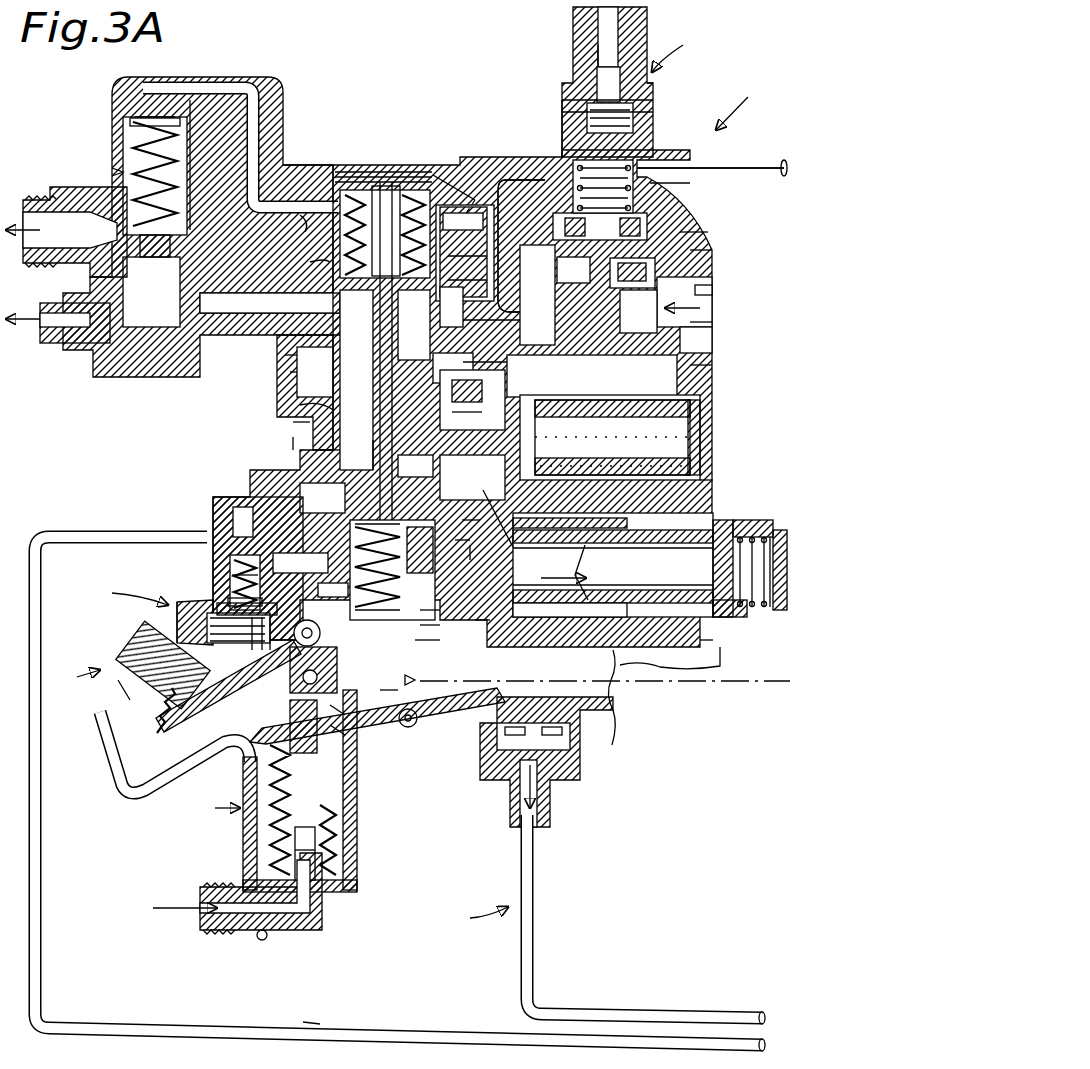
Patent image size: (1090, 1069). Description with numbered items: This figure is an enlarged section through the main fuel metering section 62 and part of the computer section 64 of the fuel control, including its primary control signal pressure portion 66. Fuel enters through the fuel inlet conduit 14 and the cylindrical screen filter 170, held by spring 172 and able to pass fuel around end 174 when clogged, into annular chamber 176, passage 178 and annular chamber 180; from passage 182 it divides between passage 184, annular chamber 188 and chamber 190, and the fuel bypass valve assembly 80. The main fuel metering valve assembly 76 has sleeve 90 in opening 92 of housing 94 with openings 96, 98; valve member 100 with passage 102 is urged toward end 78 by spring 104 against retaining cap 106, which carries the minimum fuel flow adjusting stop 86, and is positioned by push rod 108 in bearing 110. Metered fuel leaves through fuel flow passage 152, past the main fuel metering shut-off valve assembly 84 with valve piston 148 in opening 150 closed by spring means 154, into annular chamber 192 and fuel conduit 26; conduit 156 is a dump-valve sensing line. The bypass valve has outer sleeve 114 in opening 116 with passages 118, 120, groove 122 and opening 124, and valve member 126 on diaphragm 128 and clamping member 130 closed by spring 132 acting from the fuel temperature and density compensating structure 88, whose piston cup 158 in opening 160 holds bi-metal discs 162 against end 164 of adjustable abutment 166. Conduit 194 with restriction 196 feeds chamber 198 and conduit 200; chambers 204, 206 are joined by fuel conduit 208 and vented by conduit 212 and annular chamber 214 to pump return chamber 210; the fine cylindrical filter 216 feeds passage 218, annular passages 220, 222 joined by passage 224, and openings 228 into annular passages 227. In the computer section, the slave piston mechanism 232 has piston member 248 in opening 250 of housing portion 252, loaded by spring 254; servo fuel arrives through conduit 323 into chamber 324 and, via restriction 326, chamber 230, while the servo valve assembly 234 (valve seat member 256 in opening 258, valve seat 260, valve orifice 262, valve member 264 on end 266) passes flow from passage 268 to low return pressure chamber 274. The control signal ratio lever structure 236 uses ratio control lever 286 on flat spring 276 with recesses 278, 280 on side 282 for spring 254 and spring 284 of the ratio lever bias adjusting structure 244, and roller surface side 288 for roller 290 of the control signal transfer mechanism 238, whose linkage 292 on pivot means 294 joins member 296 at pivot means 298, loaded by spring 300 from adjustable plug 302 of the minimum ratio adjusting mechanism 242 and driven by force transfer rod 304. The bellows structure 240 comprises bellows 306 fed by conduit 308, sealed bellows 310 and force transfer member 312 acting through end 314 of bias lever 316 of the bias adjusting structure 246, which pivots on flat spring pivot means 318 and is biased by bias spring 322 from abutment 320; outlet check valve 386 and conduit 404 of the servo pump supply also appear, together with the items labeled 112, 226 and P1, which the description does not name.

The fuel inlet conduit 14 is at (590, 572).
The fuel conduit 26 is at (45, 205).
The main fuel metering section 62 is at (488, 371).
The computer section 64 is at (481, 904).
The primary control signal pressure portion 66 is at (347, 790).
The main fuel metering valve assembly 76 is at (285, 360).
The end of opening 78 is at (372, 455).
The fuel bypass valve assembly 80 is at (712, 294).
The main fuel metering shut-off valve assembly 84 is at (118, 172).
The minimum fuel flow adjusting stop 86 is at (375, 180).
The fuel temperature and density compensating structure 88 is at (679, 50).
The sleeve 90 is at (356, 380).
The opening 92 is at (467, 258).
The housing 94 is at (495, 160).
The opening 96 is at (445, 318).
The opening 98 is at (290, 375).
The valve member 100 is at (445, 338).
The passage 102 is at (293, 427).
The spring 104 is at (446, 150).
The retaining cap 106 is at (350, 168).
The push rod 108 is at (430, 468).
The bearing 110 is at (472, 477).
The spring retainer 112 is at (405, 180).
The outer sleeve 114 is at (572, 365).
The opening 116 is at (712, 275).
The axially extending passage 118 is at (712, 345).
The axially extending passage 120 is at (558, 312).
The annular interior groove 122 is at (690, 232).
The transversely extending opening 124 is at (712, 322).
The valve member 126 is at (705, 250).
The diaphragm 128 is at (588, 210).
The clamping member 130 is at (603, 186).
The spring 132 is at (692, 185).
The valve piston 148 is at (130, 148).
The opening 150 is at (200, 110).
The fuel flow passage 152 is at (181, 281).
The spring means 154 is at (143, 117).
The conduit 156 is at (48, 343).
The piston cup 158 is at (665, 100).
The opening 160 is at (585, 95).
The bi-metal discs 162 is at (560, 125).
The end of adjustable abutment 164 is at (673, 82).
The adjustable abutment 166 is at (573, 30).
The cylindrical screen filter 170 is at (653, 600).
The spring 172 is at (722, 615).
The end of filter 174 is at (613, 567).
The annular chamber 176 is at (715, 647).
The passage 178 is at (690, 498).
The annular chamber 180 is at (610, 437).
The passage 182 is at (712, 380).
The passage 184 is at (473, 400).
The annular chamber 188 is at (465, 408).
The chamber 190 is at (293, 336).
The annular chamber 192 is at (211, 227).
The conduit 194 is at (491, 330).
The restriction 196 is at (463, 294).
The chamber 198 is at (672, 120).
The conduit 200 is at (787, 128).
The chamber 204 is at (135, 125).
The chamber 206 is at (330, 262).
The fuel conduit 208 is at (240, 93).
The pump return chamber 210 is at (728, 295).
The conduit 212 is at (467, 210).
The annular chamber 214 is at (501, 349).
The fine cylindrical filter 216 is at (622, 468).
The passage 218 is at (612, 433).
The annular passage 220 is at (293, 437).
The annular passage 222 is at (288, 233).
The passage 224 is at (305, 310).
The port 226 is at (320, 460).
The annular passages 227 is at (305, 415).
The openings 228 is at (467, 275).
The chamber 230 is at (300, 470).
The slave piston mechanism 232 is at (352, 585).
The servo valve assembly 234 is at (473, 542).
The control signal ratio lever structure 236 is at (422, 655).
The control signal transfer mechanism 238 is at (387, 673).
The bellows structure 240 is at (362, 838).
The minimum signal pressure to fuel flow ratio adjusting mechanism 242 is at (142, 612).
The signal pressure to fuel flow ratio lever bias adjusting structure 244 is at (208, 528).
The primary control signal pressure bias adjusting structure 246 is at (134, 665).
The piston member 248 is at (305, 497).
The opening 250 is at (480, 511).
The housing portion 252 is at (362, 852).
The spring 254 is at (415, 560).
The valve seat member 256 is at (465, 540).
The opening 258 is at (613, 548).
The valve seat 260 is at (420, 620).
The valve orifice 262 is at (548, 578).
The valve member 264 is at (497, 628).
The end of ratio lever 266 is at (480, 628).
The passage 268 is at (465, 520).
The low return pressure chamber 274 is at (613, 693).
The flat spring 276 is at (300, 562).
The recess 278 is at (377, 596).
The recess 280 is at (233, 603).
The side 282 is at (240, 587).
The spring 284 is at (222, 577).
The ratio control lever 286 is at (425, 640).
The side 288 is at (287, 635).
The roller 290 is at (300, 652).
The linkage 292 is at (340, 715).
The pivot means 294 is at (418, 728).
The member 296 is at (380, 652).
The pivot means 298 is at (410, 680).
The spring 300 is at (180, 618).
The adjustable plug 302 is at (185, 655).
The force transfer rod 304 is at (703, 681).
The bellows 306 is at (262, 835).
The conduit 308 is at (210, 925).
The sealed bellows 310 is at (267, 768).
The force transfer member 312 is at (338, 735).
The end of bias lever 314 is at (390, 688).
The primary control signal pressure bias lever 316 is at (216, 717).
The flat spring pivot means 318 is at (110, 763).
The bias adjusting abutment 320 is at (113, 684).
The bias spring 322 is at (112, 722).
The conduit 323 is at (317, 1007).
The chamber 324 is at (377, 528).
The restriction 326 is at (278, 500).
The outlet check valve 386 is at (490, 765).
The conduit 404 is at (535, 936).
The pressure inlet P1 is at (185, 893).